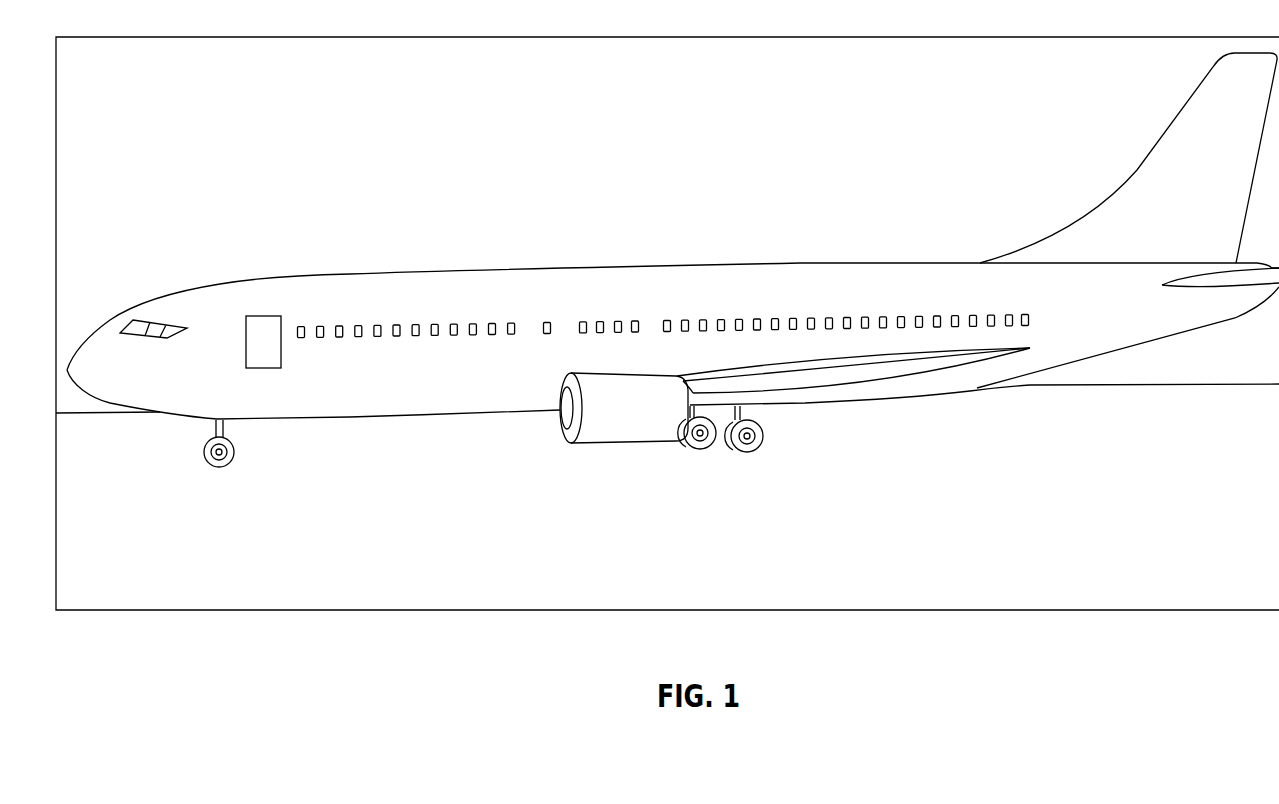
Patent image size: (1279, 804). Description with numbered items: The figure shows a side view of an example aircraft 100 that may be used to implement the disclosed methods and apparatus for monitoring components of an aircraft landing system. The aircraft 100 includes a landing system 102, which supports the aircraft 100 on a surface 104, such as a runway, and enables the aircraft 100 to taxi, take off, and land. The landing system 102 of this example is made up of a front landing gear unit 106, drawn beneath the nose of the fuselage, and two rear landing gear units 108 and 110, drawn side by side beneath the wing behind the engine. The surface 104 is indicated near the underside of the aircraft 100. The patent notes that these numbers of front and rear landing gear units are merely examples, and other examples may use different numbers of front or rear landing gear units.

The aircraft 100 is at (749, 195).
The landing system 102 is at (777, 459).
The surface 104 is at (1000, 472).
The front landing gear unit 106 is at (223, 464).
The rear landing gear unit 108 is at (697, 449).
The rear landing gear unit 110 is at (745, 452).